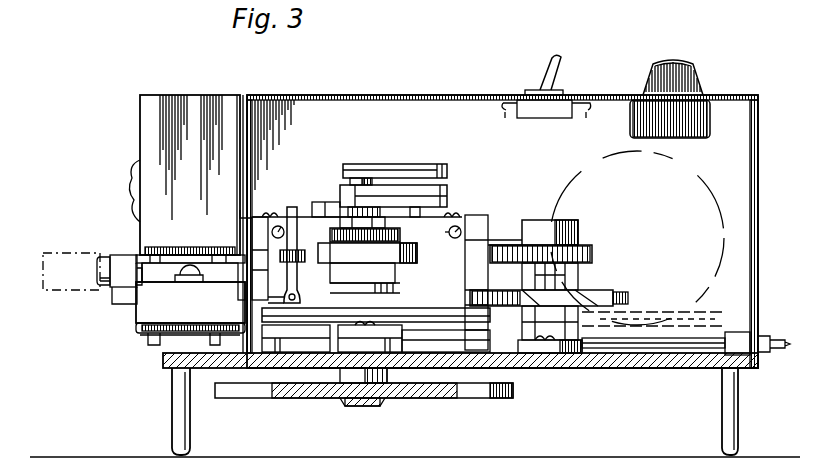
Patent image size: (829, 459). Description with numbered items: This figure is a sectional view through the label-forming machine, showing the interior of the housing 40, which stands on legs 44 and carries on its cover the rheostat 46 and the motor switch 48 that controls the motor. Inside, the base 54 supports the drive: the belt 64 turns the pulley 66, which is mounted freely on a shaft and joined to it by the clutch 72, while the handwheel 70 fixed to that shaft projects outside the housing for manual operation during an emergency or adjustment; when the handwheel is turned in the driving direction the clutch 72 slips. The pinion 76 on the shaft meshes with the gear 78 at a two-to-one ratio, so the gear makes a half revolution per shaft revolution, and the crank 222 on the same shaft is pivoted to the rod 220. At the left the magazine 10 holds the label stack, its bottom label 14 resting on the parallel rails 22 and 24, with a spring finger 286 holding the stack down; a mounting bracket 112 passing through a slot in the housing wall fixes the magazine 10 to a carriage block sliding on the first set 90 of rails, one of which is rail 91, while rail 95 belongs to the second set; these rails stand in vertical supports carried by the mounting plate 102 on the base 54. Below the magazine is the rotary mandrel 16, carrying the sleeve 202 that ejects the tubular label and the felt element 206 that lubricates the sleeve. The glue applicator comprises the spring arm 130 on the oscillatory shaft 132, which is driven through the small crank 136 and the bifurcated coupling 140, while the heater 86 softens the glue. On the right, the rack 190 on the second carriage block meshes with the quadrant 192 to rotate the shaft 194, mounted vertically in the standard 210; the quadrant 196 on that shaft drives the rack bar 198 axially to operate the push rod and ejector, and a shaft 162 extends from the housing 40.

The magazine 10 is at (152, 123).
The label 14 is at (190, 256).
The rotary mandrel 16 is at (102, 289).
The support rail 22 is at (158, 253).
The support rail 24 is at (219, 256).
The housing 40 is at (398, 87).
The legs 44 is at (175, 430).
The rheostat 46 is at (680, 60).
The motor switch 48 is at (553, 62).
The base 54 is at (619, 368).
The belt 64 is at (411, 313).
The pulley 66 is at (412, 330).
The handwheel 70 is at (496, 398).
The clutch 72 is at (343, 288).
The pinion 76 is at (375, 243).
The gear 78 is at (400, 236).
The heater 86 is at (165, 333).
The first set of rails 90 is at (444, 228).
The rail 91 is at (278, 226).
The rail 95 is at (460, 227).
The mounting plate 102 is at (303, 340).
The mounting bracket 112 is at (240, 205).
The spring arm 130 is at (192, 283).
The oscillatory shaft 132 is at (283, 296).
The crank 136 is at (297, 296).
The bifurcated coupling 140 is at (294, 250).
The output shaft 162 is at (697, 352).
The rack 190 is at (489, 243).
The quadrant 192 is at (580, 248).
The shaft 194 is at (560, 305).
The quadrant 196 is at (622, 292).
The rack bar 198 is at (476, 292).
The sleeve 202 is at (140, 255).
The felt element 206 is at (252, 292).
The standard 210 is at (580, 273).
The rod 220 is at (388, 170).
The crank 222 is at (437, 198).
The spring finger 286 is at (136, 205).